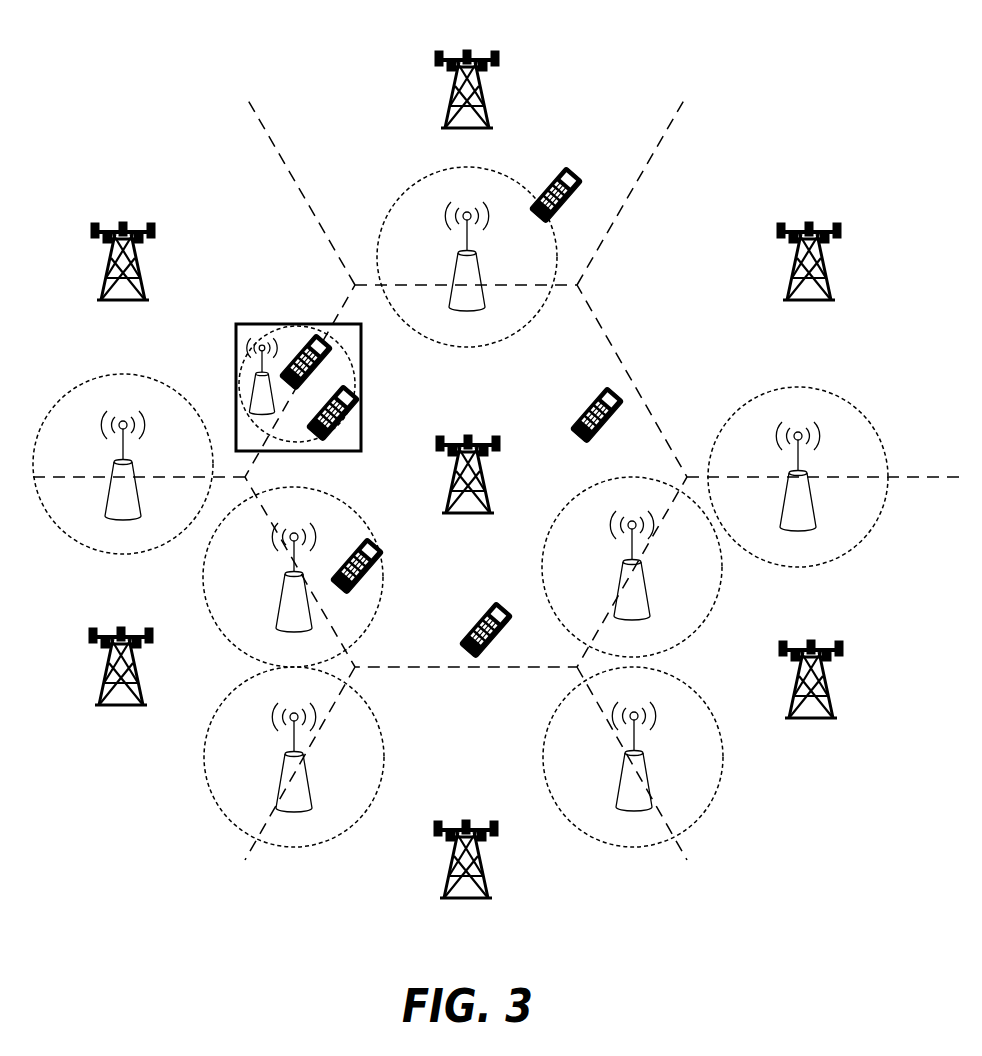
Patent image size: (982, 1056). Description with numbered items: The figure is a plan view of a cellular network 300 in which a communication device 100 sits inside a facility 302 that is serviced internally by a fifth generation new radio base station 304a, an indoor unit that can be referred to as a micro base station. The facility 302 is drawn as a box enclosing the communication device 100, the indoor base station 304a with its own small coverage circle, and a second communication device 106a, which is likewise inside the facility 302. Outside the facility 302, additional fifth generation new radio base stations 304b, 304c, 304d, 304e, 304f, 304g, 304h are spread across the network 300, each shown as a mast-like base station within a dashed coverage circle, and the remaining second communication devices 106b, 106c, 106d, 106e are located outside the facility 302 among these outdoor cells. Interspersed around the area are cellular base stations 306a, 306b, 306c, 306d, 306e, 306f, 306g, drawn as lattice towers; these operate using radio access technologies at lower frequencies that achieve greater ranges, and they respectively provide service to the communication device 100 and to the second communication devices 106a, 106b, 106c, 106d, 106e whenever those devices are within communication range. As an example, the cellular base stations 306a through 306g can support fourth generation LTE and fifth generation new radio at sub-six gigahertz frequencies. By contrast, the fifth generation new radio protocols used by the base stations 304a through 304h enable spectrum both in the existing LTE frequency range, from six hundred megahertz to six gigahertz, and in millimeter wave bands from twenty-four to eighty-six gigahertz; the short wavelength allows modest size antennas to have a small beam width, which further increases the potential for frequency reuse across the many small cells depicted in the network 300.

The cellular network 300 is at (186, 137).
The facility 302 is at (362, 371).
The communication device 100 is at (313, 335).
The second communication device 106a is at (362, 428).
The second communication device 106b is at (578, 187).
The second communication device 106c is at (612, 388).
The second communication device 106d is at (378, 575).
The second communication device 106e is at (478, 660).
The fifth generation new radio (5G NR) base station 304a is at (252, 390).
The 5G NR base station 304b is at (455, 265).
The 5G NR base station 304c is at (122, 488).
The 5G NR base station 304d is at (292, 600).
The 5G NR base station 304e is at (292, 780).
The 5G NR base station 304f is at (635, 780).
The 5G NR base station 304g is at (633, 590).
The 5G NR base station 304h is at (810, 510).
The cellular base station 306a is at (478, 88).
The cellular base station 306b is at (140, 268).
The cellular base station 306c is at (798, 267).
The cellular base station 306d is at (480, 480).
The cellular base station 306e is at (108, 690).
The cellular base station 306f is at (838, 690).
The cellular base station 306g is at (455, 866).